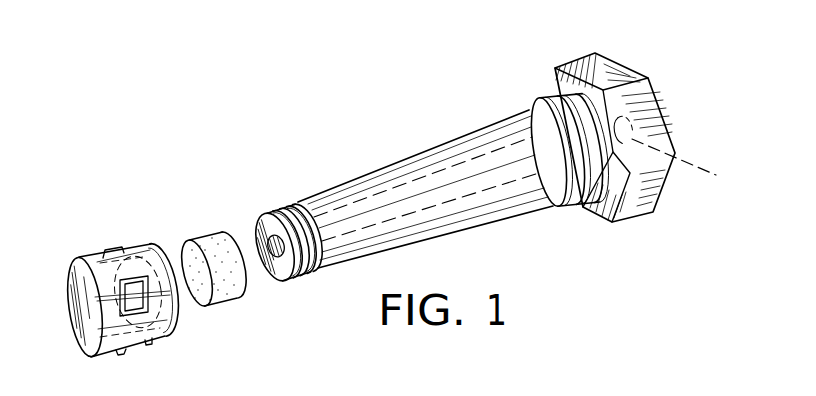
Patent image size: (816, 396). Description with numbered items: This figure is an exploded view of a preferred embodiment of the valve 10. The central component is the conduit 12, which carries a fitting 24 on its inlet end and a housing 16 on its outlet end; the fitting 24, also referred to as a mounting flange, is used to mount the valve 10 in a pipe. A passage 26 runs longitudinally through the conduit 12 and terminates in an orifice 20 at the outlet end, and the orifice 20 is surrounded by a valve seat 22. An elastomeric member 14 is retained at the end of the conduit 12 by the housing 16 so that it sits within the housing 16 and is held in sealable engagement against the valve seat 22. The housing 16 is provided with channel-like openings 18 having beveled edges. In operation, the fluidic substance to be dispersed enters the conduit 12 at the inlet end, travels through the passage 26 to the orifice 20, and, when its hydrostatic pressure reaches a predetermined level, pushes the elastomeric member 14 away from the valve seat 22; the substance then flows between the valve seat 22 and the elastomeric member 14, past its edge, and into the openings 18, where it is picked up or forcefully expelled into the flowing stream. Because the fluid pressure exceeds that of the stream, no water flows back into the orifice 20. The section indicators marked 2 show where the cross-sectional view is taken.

The valve 10 is at (198, 124).
The conduit 12 is at (478, 143).
The elastomeric member 14 is at (227, 246).
The housing 16 is at (79, 317).
The channel-like openings 18 is at (109, 252).
The orifice 20 is at (277, 255).
The valve seat 22 is at (264, 218).
The fitting 24 is at (642, 92).
The passage 26 is at (692, 164).
The section line 2- 2 is at (132, 213).